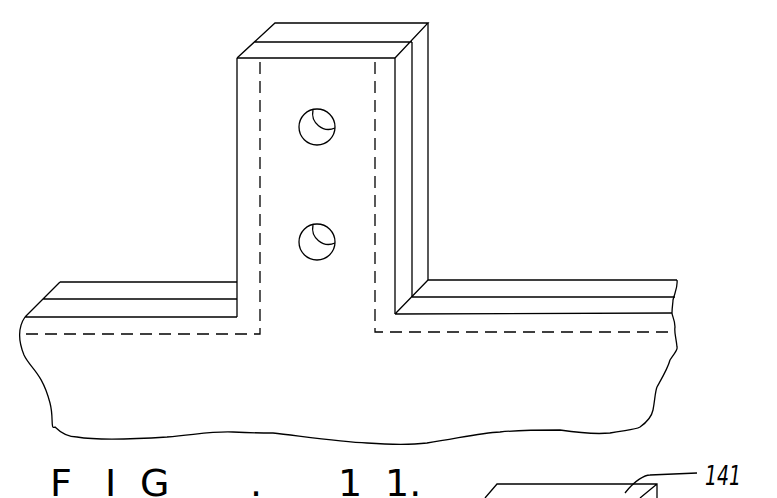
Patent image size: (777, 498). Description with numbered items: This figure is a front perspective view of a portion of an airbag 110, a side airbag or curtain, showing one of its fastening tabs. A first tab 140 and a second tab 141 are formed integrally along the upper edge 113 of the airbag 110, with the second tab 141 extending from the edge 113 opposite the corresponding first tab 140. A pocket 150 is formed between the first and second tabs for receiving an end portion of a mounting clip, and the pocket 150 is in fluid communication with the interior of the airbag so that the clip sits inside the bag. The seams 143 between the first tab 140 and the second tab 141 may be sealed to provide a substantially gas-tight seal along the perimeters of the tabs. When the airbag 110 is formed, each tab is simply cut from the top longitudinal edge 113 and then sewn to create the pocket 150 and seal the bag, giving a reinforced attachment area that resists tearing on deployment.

The airbag 110 is at (590, 370).
The upper edge 113 is at (78, 317).
The first tab 140 is at (285, 189).
The second tab 141 is at (393, 30).
The seam 143 is at (397, 192).
The pocket 150 is at (321, 341).